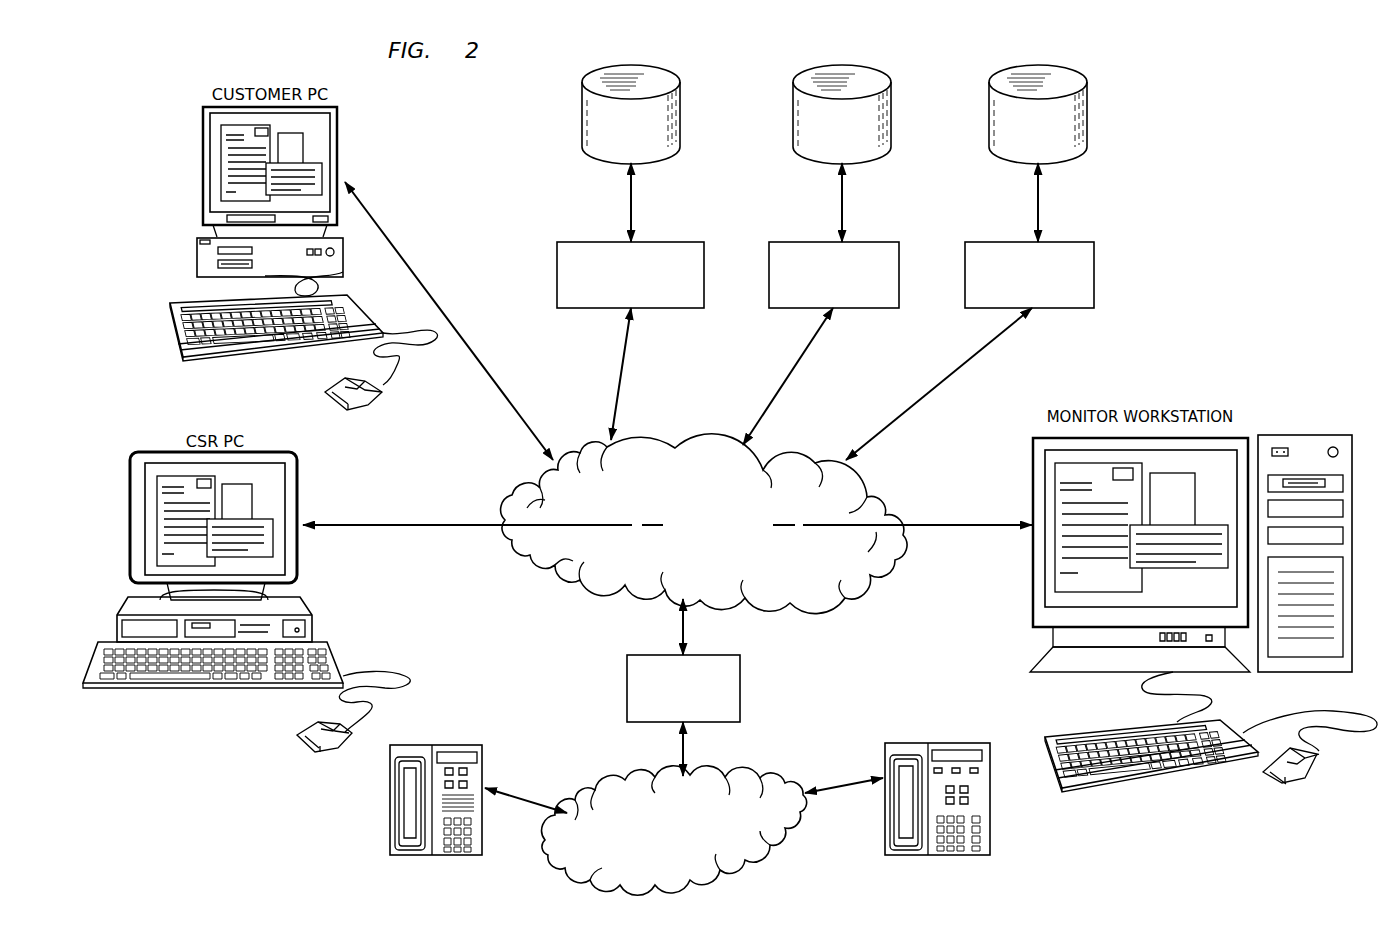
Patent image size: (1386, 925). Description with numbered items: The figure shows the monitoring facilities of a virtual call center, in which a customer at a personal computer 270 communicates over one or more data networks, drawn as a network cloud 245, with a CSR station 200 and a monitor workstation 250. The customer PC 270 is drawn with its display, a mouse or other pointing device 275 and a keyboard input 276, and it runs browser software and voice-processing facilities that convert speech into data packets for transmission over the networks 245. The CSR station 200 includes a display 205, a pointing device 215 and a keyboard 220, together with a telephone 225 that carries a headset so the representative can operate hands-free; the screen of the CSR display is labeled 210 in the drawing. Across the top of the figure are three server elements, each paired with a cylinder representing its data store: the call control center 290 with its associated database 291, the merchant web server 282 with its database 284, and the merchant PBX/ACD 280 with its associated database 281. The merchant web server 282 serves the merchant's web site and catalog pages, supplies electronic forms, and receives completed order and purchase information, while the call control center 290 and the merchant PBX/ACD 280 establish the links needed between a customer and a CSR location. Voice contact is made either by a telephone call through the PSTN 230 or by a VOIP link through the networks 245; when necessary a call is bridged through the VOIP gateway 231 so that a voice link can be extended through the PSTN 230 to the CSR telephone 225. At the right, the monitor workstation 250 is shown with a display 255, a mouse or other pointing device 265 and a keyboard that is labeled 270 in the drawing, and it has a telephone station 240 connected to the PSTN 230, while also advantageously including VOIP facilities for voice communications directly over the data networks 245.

The CSR station 200 is at (312, 606).
The display 205 is at (213, 517).
The CSR PC display screen 210 is at (160, 503).
The pointing device 215 is at (298, 738).
The keyboard 220 is at (336, 652).
The telephone 225 is at (444, 745).
The PSTN 230 is at (778, 772).
The VOIP gateway 231 is at (724, 655).
The telephone station 240 is at (950, 743).
The network cloud 245 is at (664, 440).
The monitor workstation 250 is at (1318, 436).
The display 255 is at (1035, 572).
The mouse 265 is at (1305, 778).
The customer PC 270 is at (337, 145).
The pointing device 275 is at (368, 402).
The keyboard input 276 is at (170, 307).
The merchant PBX/ACD 280 is at (1068, 242).
The database 281 is at (1069, 70).
The merchant web server 282 is at (872, 242).
The merchant web server database 284 is at (873, 70).
The call control center 290 is at (668, 242).
The database 291 is at (662, 70).